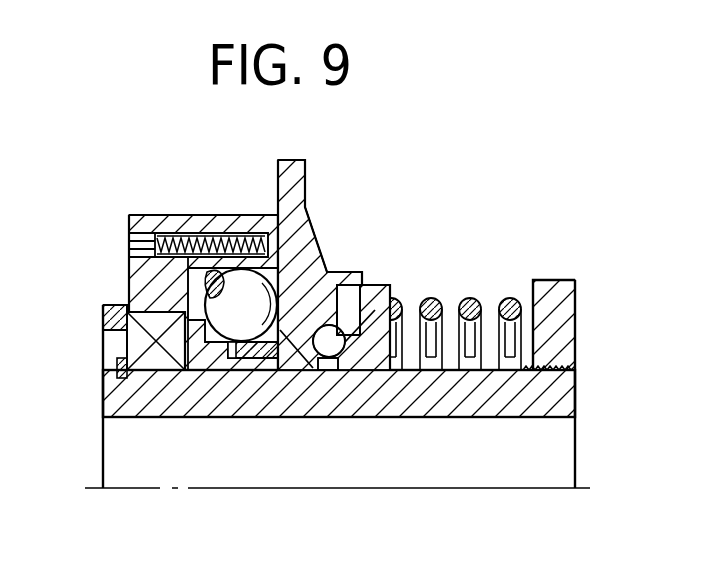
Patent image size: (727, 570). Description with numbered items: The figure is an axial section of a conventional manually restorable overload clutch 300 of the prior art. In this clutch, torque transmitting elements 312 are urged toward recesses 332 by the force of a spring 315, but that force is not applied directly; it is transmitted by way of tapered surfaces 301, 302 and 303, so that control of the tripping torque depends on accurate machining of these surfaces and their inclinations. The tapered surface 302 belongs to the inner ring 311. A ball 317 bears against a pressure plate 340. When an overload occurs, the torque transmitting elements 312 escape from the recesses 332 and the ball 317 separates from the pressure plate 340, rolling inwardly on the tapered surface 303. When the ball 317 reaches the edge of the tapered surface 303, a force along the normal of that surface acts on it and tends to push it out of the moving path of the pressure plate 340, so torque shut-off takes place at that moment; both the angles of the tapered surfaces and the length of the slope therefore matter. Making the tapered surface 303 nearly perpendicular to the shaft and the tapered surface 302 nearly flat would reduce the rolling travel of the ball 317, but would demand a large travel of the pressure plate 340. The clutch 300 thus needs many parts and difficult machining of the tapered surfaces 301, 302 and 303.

The overload clutch 300 is at (502, 202).
The tapered surface 301 is at (330, 360).
The tapered surface 302 is at (318, 362).
The tapered surface 303 is at (295, 345).
The inner ring 311 is at (245, 398).
The torque transmitting element 312 is at (262, 300).
The spring 315 is at (470, 298).
The ball 317 is at (397, 418).
The recess 332 is at (192, 232).
The pressure plate 340 is at (295, 178).